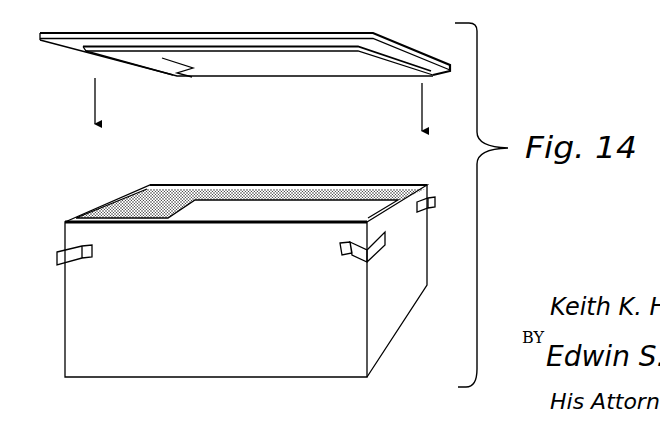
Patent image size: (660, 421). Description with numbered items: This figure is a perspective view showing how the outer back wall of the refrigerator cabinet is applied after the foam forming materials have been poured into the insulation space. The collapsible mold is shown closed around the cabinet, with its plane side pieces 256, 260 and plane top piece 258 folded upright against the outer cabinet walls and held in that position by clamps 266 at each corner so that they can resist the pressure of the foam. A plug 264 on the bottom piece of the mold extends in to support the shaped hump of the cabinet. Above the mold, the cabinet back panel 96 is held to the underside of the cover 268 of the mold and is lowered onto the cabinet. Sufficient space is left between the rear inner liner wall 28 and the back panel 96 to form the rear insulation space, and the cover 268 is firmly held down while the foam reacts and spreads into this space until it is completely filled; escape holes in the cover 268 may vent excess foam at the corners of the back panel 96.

The cover of the mold 268 is at (423, 56).
The back panel 96 is at (284, 67).
The plug 264 is at (132, 201).
The side piece 256 is at (297, 185).
The rear inner liner wall 28 is at (272, 208).
The clamps 266 is at (73, 259).
The side piece 260 is at (246, 281).
The top piece 258 is at (388, 311).